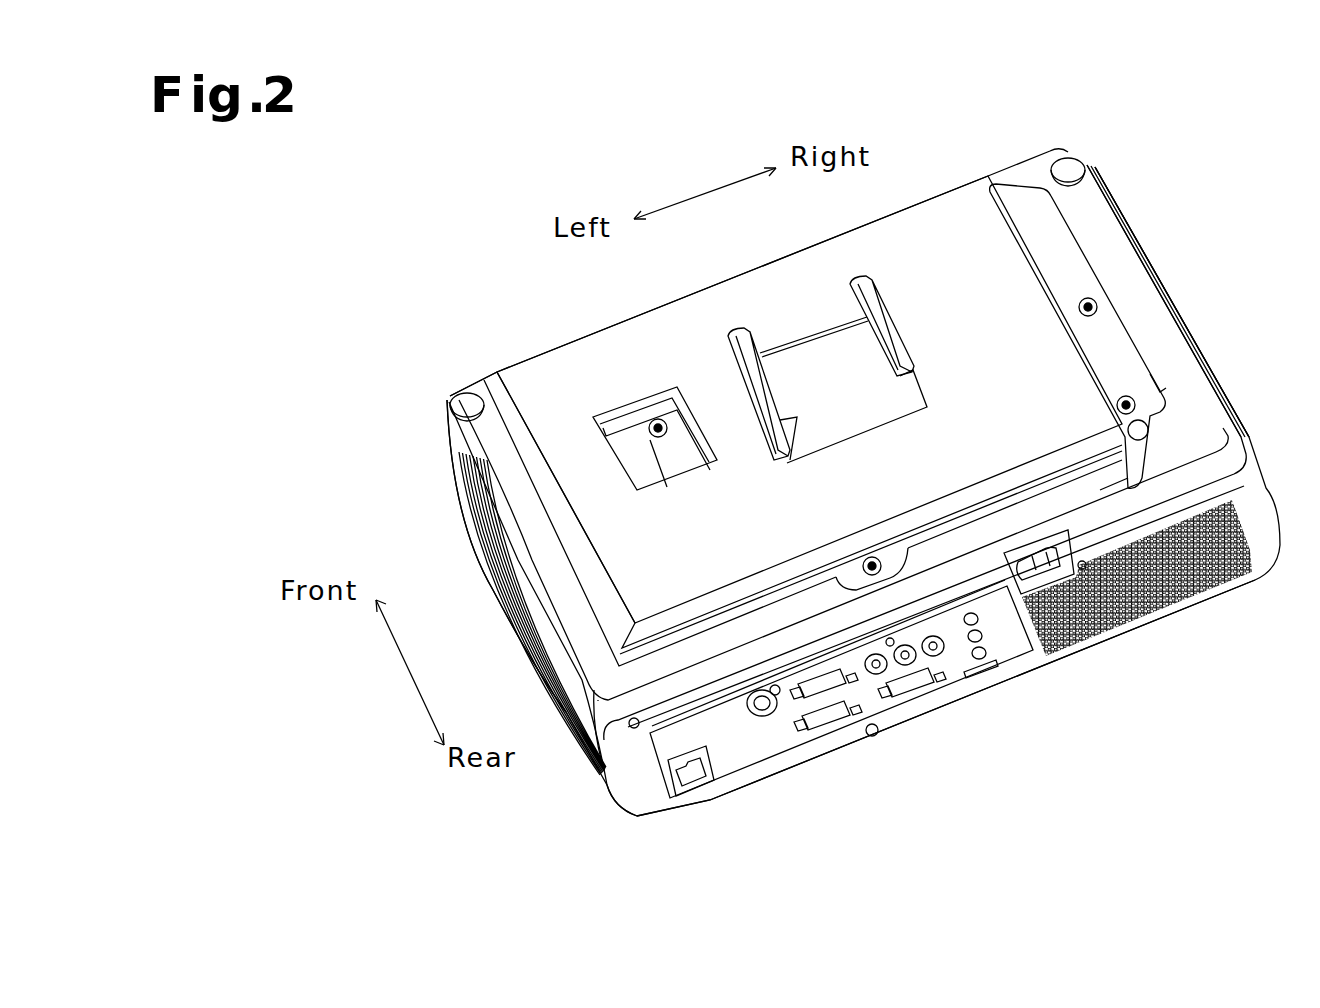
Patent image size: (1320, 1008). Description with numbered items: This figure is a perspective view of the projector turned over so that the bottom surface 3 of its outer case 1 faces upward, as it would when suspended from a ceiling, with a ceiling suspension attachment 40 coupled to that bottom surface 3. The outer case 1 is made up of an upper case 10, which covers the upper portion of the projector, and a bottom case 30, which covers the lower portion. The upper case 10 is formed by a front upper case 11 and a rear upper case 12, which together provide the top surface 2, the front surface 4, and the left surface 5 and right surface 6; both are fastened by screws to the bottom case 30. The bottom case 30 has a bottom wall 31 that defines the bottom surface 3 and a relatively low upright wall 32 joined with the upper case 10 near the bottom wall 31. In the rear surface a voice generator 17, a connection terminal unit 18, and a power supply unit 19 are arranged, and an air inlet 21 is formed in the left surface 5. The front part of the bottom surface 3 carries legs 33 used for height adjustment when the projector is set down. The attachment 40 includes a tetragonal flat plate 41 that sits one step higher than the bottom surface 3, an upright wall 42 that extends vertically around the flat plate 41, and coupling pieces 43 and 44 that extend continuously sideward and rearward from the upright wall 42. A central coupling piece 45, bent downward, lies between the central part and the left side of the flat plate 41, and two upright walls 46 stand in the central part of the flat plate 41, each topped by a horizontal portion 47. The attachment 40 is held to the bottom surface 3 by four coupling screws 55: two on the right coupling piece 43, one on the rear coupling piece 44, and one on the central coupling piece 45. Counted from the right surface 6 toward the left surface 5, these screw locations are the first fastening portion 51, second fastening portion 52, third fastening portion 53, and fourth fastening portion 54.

The outer case 1 is at (553, 326).
The top surface 2 is at (966, 702).
The bottom surface 3 is at (1172, 352).
The front surface 4 is at (830, 228).
The left surface 5 is at (518, 580).
The right surface 6 is at (1168, 285).
The upper case 10 is at (1193, 190).
The front upper case 11 is at (1135, 205).
The rear upper case 12 is at (1142, 230).
The voice generator 17 is at (1102, 640).
The connection terminal unit 18 is at (736, 757).
The power supply unit 19 is at (1038, 550).
The air inlet 21 is at (550, 648).
The bottom case 30 is at (680, 858).
The bottom wall 31 is at (613, 680).
The upright wall 32 is at (650, 690).
The legs 33 is at (467, 390).
The ceiling suspension attachment 40 is at (956, 198).
The flat plate 41 is at (762, 285).
The upright wall 42 is at (745, 590).
The right coupling piece 43 is at (1180, 384).
The rear coupling piece 44 is at (1132, 472).
The central coupling piece 45 is at (688, 455).
The upright walls 46 is at (930, 388).
The horizontal portion 47 is at (900, 330).
The first fastening portion 51 is at (1078, 304).
The second fastening portion 52 is at (1116, 402).
The third fastening portion 53 is at (874, 556).
The fourth fastening portion 54 is at (658, 418).
The coupling screws 55 is at (668, 428).